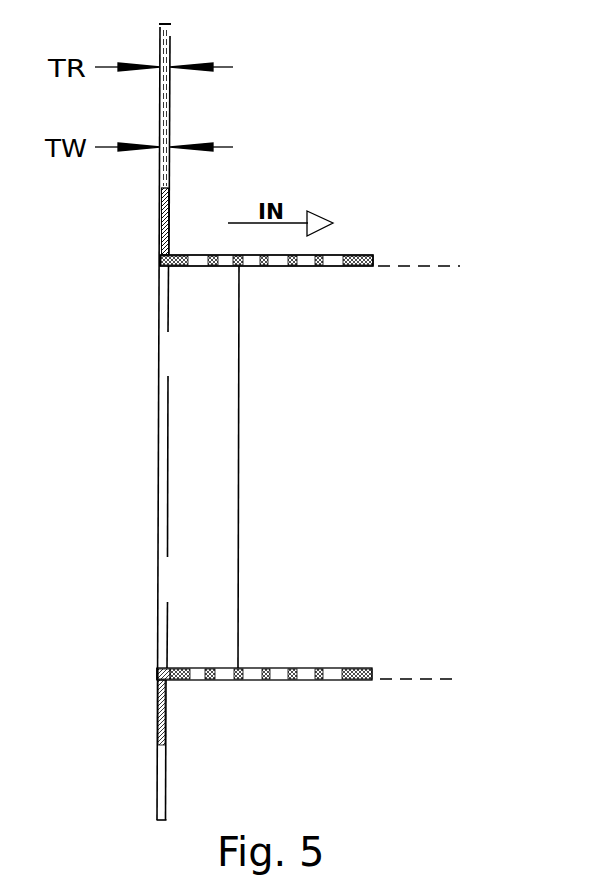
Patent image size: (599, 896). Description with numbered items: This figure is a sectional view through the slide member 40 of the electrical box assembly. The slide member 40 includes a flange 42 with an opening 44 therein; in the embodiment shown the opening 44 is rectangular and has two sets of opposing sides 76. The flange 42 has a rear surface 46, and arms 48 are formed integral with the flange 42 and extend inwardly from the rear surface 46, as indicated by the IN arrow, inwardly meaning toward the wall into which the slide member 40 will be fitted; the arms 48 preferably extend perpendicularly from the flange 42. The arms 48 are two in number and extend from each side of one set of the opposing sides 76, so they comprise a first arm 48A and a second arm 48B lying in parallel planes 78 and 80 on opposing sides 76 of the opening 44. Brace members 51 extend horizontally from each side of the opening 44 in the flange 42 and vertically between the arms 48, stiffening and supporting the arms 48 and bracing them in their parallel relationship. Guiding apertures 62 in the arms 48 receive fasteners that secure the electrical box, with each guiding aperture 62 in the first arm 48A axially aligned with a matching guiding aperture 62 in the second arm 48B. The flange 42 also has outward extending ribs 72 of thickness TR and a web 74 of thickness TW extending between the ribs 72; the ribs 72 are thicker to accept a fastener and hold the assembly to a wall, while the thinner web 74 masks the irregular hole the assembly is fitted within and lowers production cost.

The slide member 40 is at (318, 76).
The flange 42 is at (170, 104).
The opening 44 is at (147, 463).
The rear surface 46 is at (182, 765).
The arms 48 is at (358, 256).
The first arm 48A is at (352, 268).
The second arm 48B is at (352, 667).
The brace members 51 is at (216, 448).
The guiding apertures 62 is at (252, 267).
The ribs 72 is at (163, 35).
The web 74 is at (160, 202).
The opposing sides 76 is at (158, 268).
The plane 78 is at (412, 266).
The plane 80 is at (413, 679).